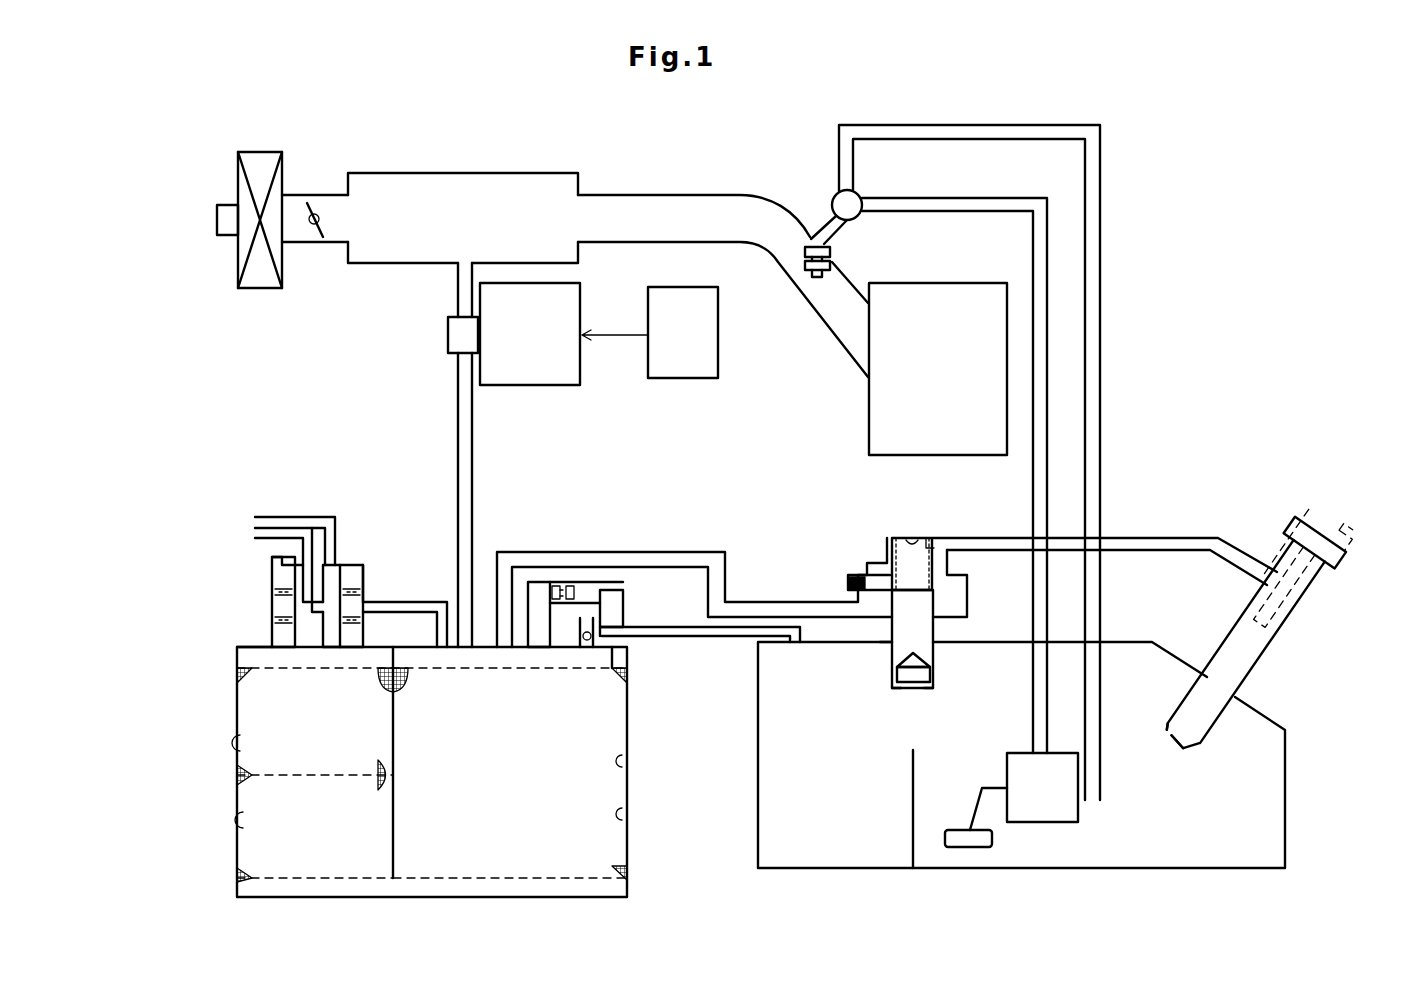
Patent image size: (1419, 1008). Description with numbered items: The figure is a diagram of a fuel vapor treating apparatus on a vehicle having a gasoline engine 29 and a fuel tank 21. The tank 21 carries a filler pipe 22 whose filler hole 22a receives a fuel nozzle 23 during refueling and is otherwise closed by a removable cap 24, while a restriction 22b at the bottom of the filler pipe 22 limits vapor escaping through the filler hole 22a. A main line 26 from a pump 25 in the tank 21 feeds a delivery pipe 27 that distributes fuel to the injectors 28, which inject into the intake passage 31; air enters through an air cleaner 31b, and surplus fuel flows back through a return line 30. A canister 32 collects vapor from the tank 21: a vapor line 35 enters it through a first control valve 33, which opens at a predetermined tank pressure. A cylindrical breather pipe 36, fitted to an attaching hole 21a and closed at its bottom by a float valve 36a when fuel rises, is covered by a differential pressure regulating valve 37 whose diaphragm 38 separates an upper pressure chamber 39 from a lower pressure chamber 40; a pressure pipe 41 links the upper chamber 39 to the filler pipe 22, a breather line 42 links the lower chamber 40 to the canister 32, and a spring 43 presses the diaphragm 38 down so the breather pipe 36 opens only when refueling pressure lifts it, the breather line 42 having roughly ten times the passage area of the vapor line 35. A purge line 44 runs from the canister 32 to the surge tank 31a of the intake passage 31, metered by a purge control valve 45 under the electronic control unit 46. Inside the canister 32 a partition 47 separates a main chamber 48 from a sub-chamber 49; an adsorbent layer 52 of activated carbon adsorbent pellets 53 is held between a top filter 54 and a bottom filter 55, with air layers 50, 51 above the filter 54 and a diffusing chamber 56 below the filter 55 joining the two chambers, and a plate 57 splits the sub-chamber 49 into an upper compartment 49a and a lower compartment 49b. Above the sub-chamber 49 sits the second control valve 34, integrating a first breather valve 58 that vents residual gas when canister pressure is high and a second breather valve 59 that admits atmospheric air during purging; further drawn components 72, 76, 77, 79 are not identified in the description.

The fuel tank 21 is at (1285, 763).
The attaching hole 21a is at (892, 644).
The filler pipe 22 is at (1302, 600).
The filler hole 22a is at (1330, 565).
The restriction 22b is at (1185, 748).
The fuel nozzle 23 is at (1272, 560).
The removable cap 24 is at (1343, 555).
The pump 25 is at (1065, 827).
The main line 26 is at (1032, 480).
The delivery pipe 27 is at (830, 195).
The injector 28 is at (833, 254).
The gasoline engine 29 is at (954, 290).
The return line 30 is at (1100, 342).
The intake passage 31 is at (658, 193).
The surge tank 31a is at (468, 163).
The air cleaner 31b is at (273, 146).
The canister 32 is at (213, 693).
The first control valve 33 is at (603, 610).
The second control valve 34 is at (350, 547).
The vapor line 35 is at (687, 630).
The breather pipe 36 is at (935, 630).
The float valve 36a is at (891, 677).
The differential pressure regulating valve 37 is at (880, 538).
The diaphragm 38 is at (887, 580).
The upper pressure chamber 39 is at (913, 545).
The lower pressure chamber 40 is at (967, 602).
The pressure pipe 41 is at (1152, 542).
The breather line 42 is at (620, 552).
The spring 43 is at (945, 538).
The purge line 44 is at (470, 455).
The purge control valve 45 is at (567, 385).
The electronic control unit 46 is at (718, 370).
The partition 47 is at (395, 745).
The main chamber 48 is at (622, 760).
The sub-chamber 49 is at (173, 765).
The upper compartment 49a is at (238, 753).
The lower compartment 49b is at (240, 820).
The air layer 50 is at (623, 655).
The air layer 51 is at (253, 648).
The adsorbent layer 52 is at (622, 815).
The adsorbent pellets 53 is at (617, 677).
The filter 54 is at (307, 672).
The filter 55 is at (327, 877).
The diffusing chamber 56 is at (522, 883).
The plate 57 is at (300, 780).
The first breather valve 58 is at (272, 577).
The second breather valve 59 is at (353, 570).
The valve housing 72 is at (372, 580).
The connecting pipe 76 is at (427, 603).
The vent pipe 77 is at (280, 518).
The atmosphere pipe 79 is at (252, 536).